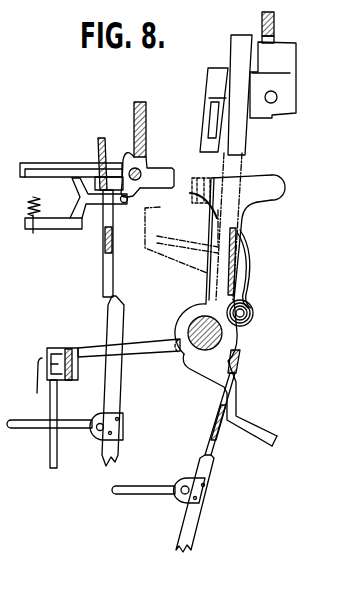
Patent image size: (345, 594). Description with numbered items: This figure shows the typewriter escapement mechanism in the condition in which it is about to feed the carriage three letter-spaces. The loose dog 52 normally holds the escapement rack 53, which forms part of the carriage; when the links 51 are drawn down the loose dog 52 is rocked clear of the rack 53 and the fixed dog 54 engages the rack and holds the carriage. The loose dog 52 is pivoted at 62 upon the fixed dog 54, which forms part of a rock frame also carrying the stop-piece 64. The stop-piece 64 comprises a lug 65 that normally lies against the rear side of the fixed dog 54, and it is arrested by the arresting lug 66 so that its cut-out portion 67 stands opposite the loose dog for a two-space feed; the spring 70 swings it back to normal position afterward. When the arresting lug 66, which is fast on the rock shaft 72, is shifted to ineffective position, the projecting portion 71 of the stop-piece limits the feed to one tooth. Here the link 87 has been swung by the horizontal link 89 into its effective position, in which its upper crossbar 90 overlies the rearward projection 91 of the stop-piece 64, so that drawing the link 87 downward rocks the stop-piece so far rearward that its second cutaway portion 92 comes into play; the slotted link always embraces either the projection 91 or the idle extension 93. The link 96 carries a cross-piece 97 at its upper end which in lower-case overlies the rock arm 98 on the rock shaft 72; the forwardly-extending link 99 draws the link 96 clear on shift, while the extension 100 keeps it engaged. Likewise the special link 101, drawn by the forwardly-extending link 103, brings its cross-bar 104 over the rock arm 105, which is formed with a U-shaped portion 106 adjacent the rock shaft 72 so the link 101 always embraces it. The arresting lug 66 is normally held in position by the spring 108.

The links 51 is at (58, 455).
The loose dog 52 is at (247, 36).
The escapement rack 53 is at (275, 28).
The fixed dog 54 is at (292, 61).
The pivot 62 is at (147, 250).
The stop-piece 64 is at (290, 187).
The lug 65 is at (282, 196).
The arresting lug 66 is at (158, 178).
The cut-out portion 67 is at (207, 210).
The spring 70 is at (248, 266).
The projecting portion 71 is at (258, 180).
The rock shaft 72 is at (130, 186).
The link 87 is at (198, 522).
The horizontal link 89 is at (148, 495).
The upper crossbar 90 is at (243, 361).
The rearward projection 91 is at (240, 385).
The second cutaway portion 92 is at (210, 135).
The idle extension 93 is at (279, 440).
The link 96 is at (124, 322).
The cross-piece 97 is at (101, 146).
The rock arm 98 is at (121, 204).
The forwardly-extending link 99 is at (92, 418).
The extension 100 is at (26, 231).
The special link 101 is at (105, 265).
The forwardly-extending link 103 is at (27, 429).
The cross-bar 104 is at (97, 158).
The rock arm 105 is at (53, 167).
The U-shaped portion 106 is at (75, 182).
The spring 108 is at (20, 206).